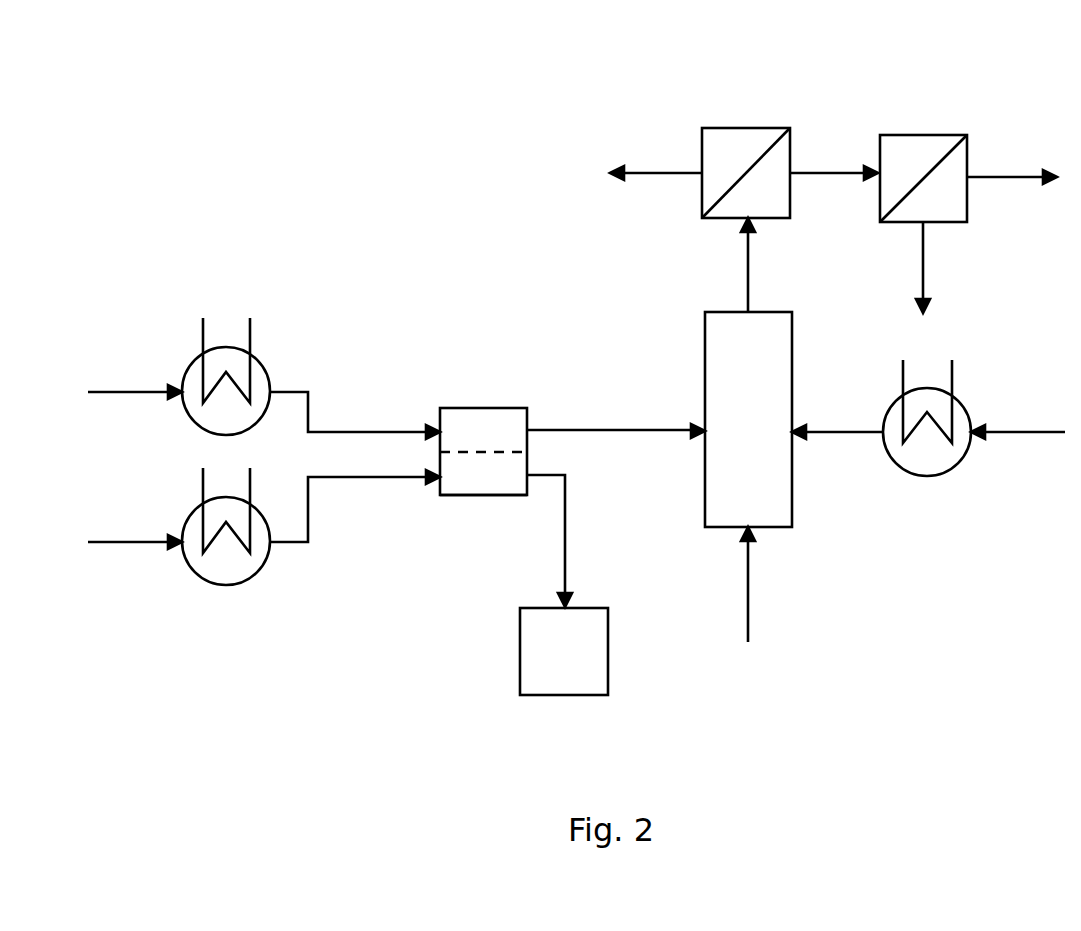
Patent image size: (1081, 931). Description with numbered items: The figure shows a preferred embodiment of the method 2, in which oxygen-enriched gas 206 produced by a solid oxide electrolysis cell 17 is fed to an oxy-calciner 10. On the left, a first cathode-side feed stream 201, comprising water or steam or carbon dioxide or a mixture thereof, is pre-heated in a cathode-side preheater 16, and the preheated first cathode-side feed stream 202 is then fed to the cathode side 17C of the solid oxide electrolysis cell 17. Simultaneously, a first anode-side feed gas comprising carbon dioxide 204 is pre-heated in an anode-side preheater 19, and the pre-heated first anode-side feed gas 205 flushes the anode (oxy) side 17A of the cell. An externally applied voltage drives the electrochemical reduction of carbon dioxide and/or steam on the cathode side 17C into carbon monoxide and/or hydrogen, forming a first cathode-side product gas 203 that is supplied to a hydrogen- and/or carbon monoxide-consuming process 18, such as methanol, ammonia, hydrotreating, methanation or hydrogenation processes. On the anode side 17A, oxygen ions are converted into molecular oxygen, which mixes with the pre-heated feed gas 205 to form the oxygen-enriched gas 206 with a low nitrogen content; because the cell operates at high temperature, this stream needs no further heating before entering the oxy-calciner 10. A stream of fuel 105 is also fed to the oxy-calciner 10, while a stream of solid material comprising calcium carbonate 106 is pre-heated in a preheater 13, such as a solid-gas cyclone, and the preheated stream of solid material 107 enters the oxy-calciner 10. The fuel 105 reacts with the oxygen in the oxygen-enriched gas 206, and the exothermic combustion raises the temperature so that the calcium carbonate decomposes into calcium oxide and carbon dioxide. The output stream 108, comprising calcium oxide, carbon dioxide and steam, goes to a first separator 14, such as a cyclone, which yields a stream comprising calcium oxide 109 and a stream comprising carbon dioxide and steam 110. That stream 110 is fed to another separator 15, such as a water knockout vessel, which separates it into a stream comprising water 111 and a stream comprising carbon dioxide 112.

The method 2 is at (286, 184).
The oxy-calciner 10 is at (707, 312).
The preheater 13 is at (958, 397).
The first separator 14 is at (702, 128).
The separator 15 is at (880, 135).
The cathode-side preheater 16 is at (200, 508).
The solid oxide electrolysis cell 17 is at (440, 408).
The anode (oxy) side 17A is at (502, 427).
The cathode side 17C is at (458, 478).
The hydrogen- and/or carbon monoxide-consuming process 18 is at (523, 607).
The anode-side preheater 19 is at (200, 358).
The stream of fuel 105 is at (748, 595).
The stream of solid material comprising calcium carbonate 106 is at (1018, 428).
The preheated stream of solid material 107 is at (838, 428).
The output stream 108 is at (748, 275).
The stream comprising calcium oxide 109 is at (665, 173).
The stream comprising carbon dioxide and steam 110 is at (838, 172).
The stream comprising H2O 111 is at (925, 267).
The stream comprising carbon dioxide 112 is at (1002, 175).
The first cathode-side feed stream 201 is at (140, 542).
The preheated first cathode-side feed stream 202 is at (390, 480).
The first cathode-side product gas 203 is at (568, 547).
The first anode-side feed gas comprising carbon dioxide 204 is at (140, 392).
The pre-heated first anode-side feed gas 205 is at (387, 432).
The oxygen-enriched gas 206 is at (658, 428).